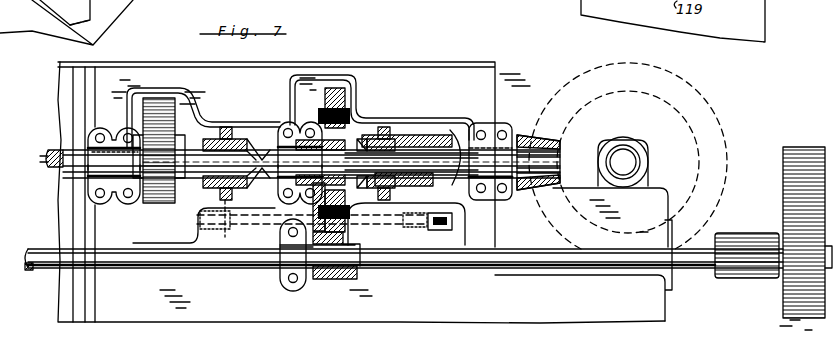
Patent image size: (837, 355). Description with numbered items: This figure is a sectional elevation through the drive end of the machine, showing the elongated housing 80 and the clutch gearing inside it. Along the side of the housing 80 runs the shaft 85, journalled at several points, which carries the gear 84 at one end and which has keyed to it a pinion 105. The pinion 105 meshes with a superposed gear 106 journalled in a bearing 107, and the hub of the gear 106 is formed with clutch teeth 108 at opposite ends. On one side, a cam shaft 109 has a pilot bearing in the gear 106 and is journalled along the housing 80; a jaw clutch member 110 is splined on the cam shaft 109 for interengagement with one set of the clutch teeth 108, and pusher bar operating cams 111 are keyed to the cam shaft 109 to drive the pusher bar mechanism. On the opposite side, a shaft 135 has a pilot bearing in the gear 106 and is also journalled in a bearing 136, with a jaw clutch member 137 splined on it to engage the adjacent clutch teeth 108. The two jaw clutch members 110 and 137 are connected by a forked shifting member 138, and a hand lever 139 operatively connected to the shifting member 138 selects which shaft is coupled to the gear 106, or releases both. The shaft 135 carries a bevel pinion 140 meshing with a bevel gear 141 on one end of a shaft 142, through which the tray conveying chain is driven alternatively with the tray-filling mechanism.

The housing 80 is at (480, 77).
The gear 84 is at (804, 160).
The shaft 85 is at (510, 255).
The pinion 105 is at (322, 275).
The gear 106 is at (332, 100).
The bearing 107 is at (298, 122).
The clutch teeth 108 is at (262, 140).
The cam shaft 109 is at (60, 148).
The jaw clutch member 110 is at (212, 140).
The pusher bar operating cams 111 is at (155, 112).
The shaft 135 is at (453, 160).
The bearing 136 is at (490, 133).
The jaw clutch member 137 is at (400, 138).
The forked shifting member 138 is at (252, 224).
The hand lever 139 is at (440, 230).
The bevel pinion 140 is at (552, 122).
The bevel gear 141 is at (714, 115).
The shaft 142 is at (628, 160).